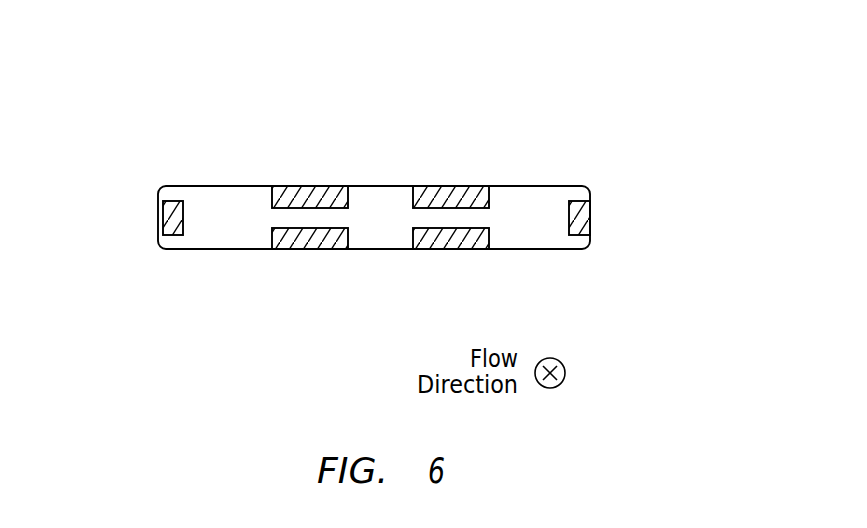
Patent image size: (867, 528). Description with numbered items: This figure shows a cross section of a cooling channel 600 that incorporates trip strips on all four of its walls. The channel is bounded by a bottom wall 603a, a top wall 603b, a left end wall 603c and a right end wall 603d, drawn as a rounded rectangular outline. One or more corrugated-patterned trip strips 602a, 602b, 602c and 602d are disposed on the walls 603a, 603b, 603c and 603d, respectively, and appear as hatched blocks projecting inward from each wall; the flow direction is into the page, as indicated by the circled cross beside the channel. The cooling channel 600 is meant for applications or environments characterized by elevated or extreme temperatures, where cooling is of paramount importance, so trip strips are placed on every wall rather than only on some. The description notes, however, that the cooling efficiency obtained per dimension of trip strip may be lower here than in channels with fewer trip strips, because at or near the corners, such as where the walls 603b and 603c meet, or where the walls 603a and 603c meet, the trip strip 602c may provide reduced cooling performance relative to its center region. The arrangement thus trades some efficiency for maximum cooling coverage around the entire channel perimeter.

The cooling channel 600 is at (471, 82).
The trip strip 602a is at (427, 250).
The trip strip 602b is at (427, 187).
The trip strip 602c is at (163, 220).
The trip strip 602d is at (590, 213).
The wall 603a is at (207, 249).
The wall 603b is at (212, 186).
The wall 603c is at (160, 189).
The wall 603d is at (590, 245).